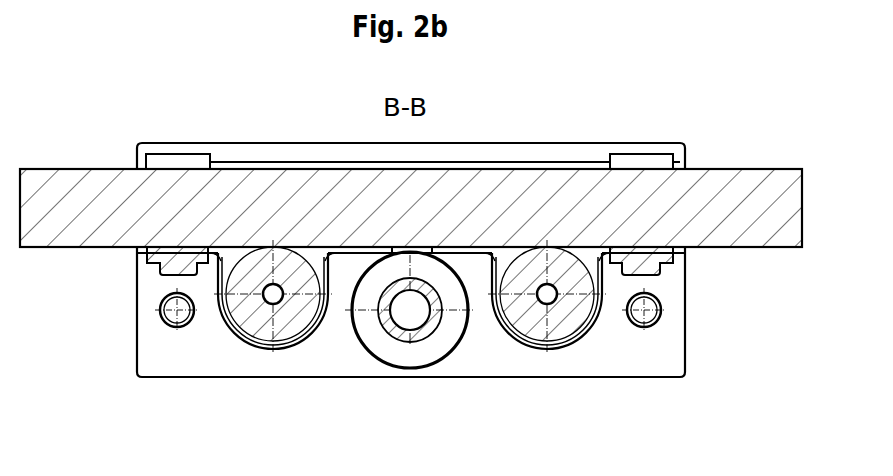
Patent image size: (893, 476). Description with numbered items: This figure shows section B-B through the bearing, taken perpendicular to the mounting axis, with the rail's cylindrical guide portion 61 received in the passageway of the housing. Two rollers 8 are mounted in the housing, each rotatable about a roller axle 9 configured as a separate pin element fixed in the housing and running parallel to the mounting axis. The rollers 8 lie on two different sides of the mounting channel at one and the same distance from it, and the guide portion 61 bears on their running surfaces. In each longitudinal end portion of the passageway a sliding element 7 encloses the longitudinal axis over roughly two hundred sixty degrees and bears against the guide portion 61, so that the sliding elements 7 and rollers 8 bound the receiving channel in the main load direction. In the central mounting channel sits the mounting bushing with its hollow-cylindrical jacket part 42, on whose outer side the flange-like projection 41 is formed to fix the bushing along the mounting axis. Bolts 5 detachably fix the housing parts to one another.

The guide portion 61 is at (83, 181).
The sliding element 7 is at (168, 264).
The bolt 5 is at (162, 318).
The roller 8 is at (257, 330).
The roller axle 9 is at (277, 300).
The projection 41 is at (410, 345).
The jacket part 42 is at (433, 345).